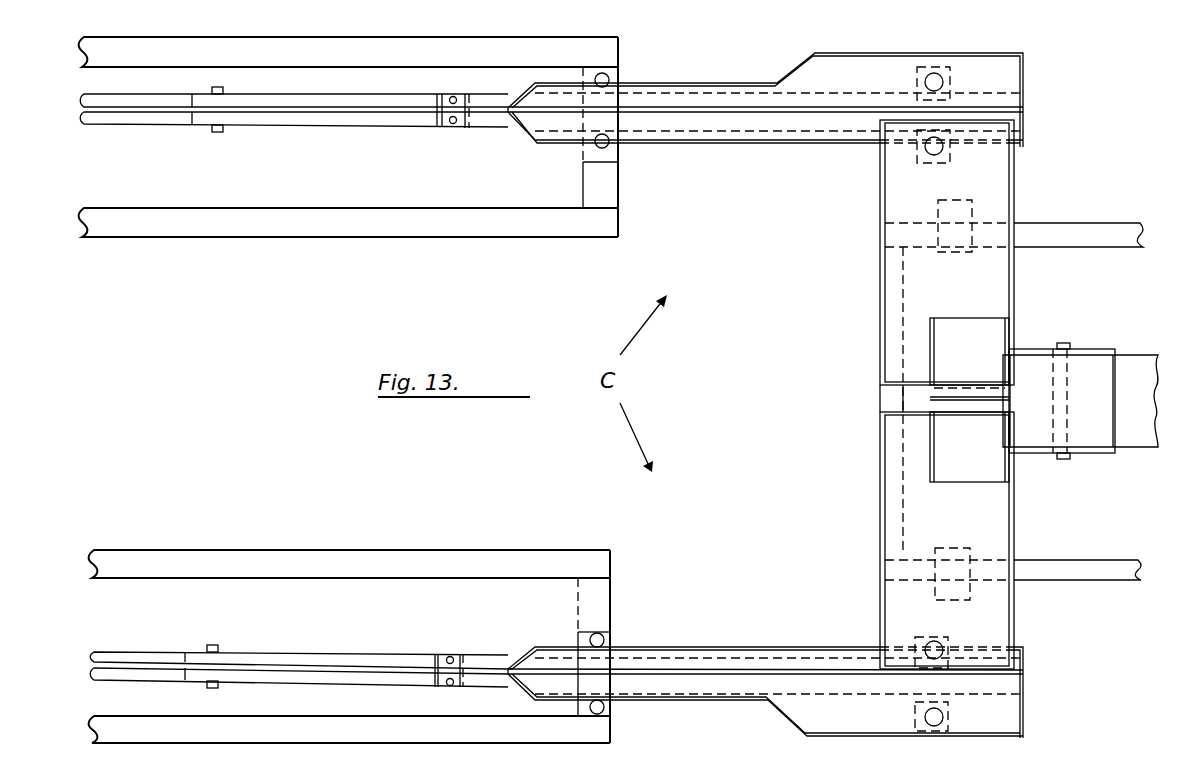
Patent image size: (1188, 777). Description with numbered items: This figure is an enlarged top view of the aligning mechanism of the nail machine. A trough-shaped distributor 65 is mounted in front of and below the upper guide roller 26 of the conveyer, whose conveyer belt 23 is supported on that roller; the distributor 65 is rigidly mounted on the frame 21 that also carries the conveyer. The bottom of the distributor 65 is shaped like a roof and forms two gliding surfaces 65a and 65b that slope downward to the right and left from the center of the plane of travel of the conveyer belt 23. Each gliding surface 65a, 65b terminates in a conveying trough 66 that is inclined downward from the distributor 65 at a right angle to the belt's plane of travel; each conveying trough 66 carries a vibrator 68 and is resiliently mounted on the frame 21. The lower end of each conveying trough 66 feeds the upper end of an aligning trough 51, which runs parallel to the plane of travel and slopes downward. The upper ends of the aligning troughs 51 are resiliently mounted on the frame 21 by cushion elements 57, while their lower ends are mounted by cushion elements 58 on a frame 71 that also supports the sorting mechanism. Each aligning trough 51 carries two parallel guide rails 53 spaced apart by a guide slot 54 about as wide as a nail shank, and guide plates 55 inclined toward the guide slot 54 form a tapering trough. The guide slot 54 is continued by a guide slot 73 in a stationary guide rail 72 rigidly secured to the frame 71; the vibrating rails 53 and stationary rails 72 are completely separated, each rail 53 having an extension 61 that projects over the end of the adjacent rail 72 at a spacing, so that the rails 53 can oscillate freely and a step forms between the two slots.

The frame 21 is at (1080, 228).
The conveyer belt 23 is at (1132, 362).
The upper guide roller 26 is at (1032, 350).
The aligning trough 51 is at (783, 151).
The guide rail 53 is at (488, 683).
The guide slot 54 is at (680, 110).
The guide plate 55 is at (740, 135).
The cushion element 57 is at (943, 82).
The cushion element 58 is at (612, 75).
The extension 61 is at (452, 96).
The distributor 65 is at (915, 397).
The gliding surface 65a is at (945, 335).
The gliding surface 65b is at (940, 456).
The conveying trough 66 is at (898, 192).
The vibrator 68 is at (975, 205).
The frame 71 is at (348, 223).
The guide rail 72 is at (247, 118).
The guide slot 73 is at (318, 108).